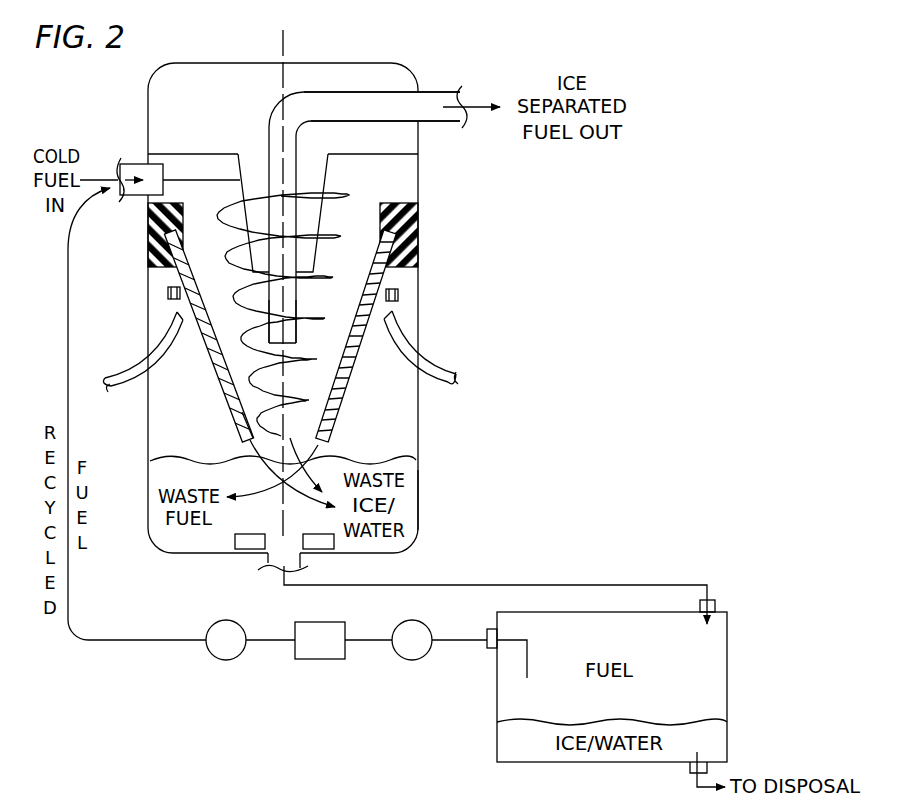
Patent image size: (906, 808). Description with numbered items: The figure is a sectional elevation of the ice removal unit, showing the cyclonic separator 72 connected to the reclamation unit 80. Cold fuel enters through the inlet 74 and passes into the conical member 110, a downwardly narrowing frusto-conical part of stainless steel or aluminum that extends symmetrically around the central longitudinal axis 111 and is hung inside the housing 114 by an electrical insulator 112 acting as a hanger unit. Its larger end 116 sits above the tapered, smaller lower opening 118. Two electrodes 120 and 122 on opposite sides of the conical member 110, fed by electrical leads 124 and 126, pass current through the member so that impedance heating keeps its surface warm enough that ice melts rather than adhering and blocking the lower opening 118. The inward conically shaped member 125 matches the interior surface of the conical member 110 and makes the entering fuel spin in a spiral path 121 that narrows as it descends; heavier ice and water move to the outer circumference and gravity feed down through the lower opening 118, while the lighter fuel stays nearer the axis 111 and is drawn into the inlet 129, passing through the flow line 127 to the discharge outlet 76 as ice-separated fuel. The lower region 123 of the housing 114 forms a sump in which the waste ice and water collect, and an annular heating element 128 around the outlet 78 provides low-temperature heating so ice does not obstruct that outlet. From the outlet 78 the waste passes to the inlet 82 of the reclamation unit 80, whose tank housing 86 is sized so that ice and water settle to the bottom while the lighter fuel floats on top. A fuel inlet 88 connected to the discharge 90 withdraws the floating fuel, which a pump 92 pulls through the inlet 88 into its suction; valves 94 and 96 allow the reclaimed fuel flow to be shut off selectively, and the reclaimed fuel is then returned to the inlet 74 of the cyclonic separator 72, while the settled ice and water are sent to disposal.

The cyclonic separator 72 is at (150, 80).
The inlet 74 is at (141, 163).
The discharge outlet 76 is at (435, 92).
The outlet 78 is at (263, 562).
The reclamation unit 80 is at (733, 700).
The inlet 82 is at (718, 605).
The tank housing 86 is at (497, 740).
The fuel inlet 88 is at (525, 667).
The discharge 90 is at (487, 632).
The pump 92 is at (316, 658).
The valve 94 is at (414, 658).
The valve 96 is at (215, 656).
The conical member 110 is at (150, 247).
The longitudinal axis 111 is at (281, 50).
The electrical insulator 112 is at (420, 243).
The housing 114 is at (420, 283).
The larger end 116 is at (149, 213).
The lower opening 118 is at (245, 412).
The electrode 120 is at (168, 297).
The spiral path 121 is at (350, 212).
The electrode 122 is at (400, 296).
The lower region 123 is at (420, 500).
The electrical lead 124 is at (128, 378).
The inward conically shaped member 125 is at (325, 175).
The electrical lead 126 is at (453, 367).
The flow line 127 is at (270, 130).
The heating element 128 is at (233, 540).
The inlet 129 is at (272, 320).